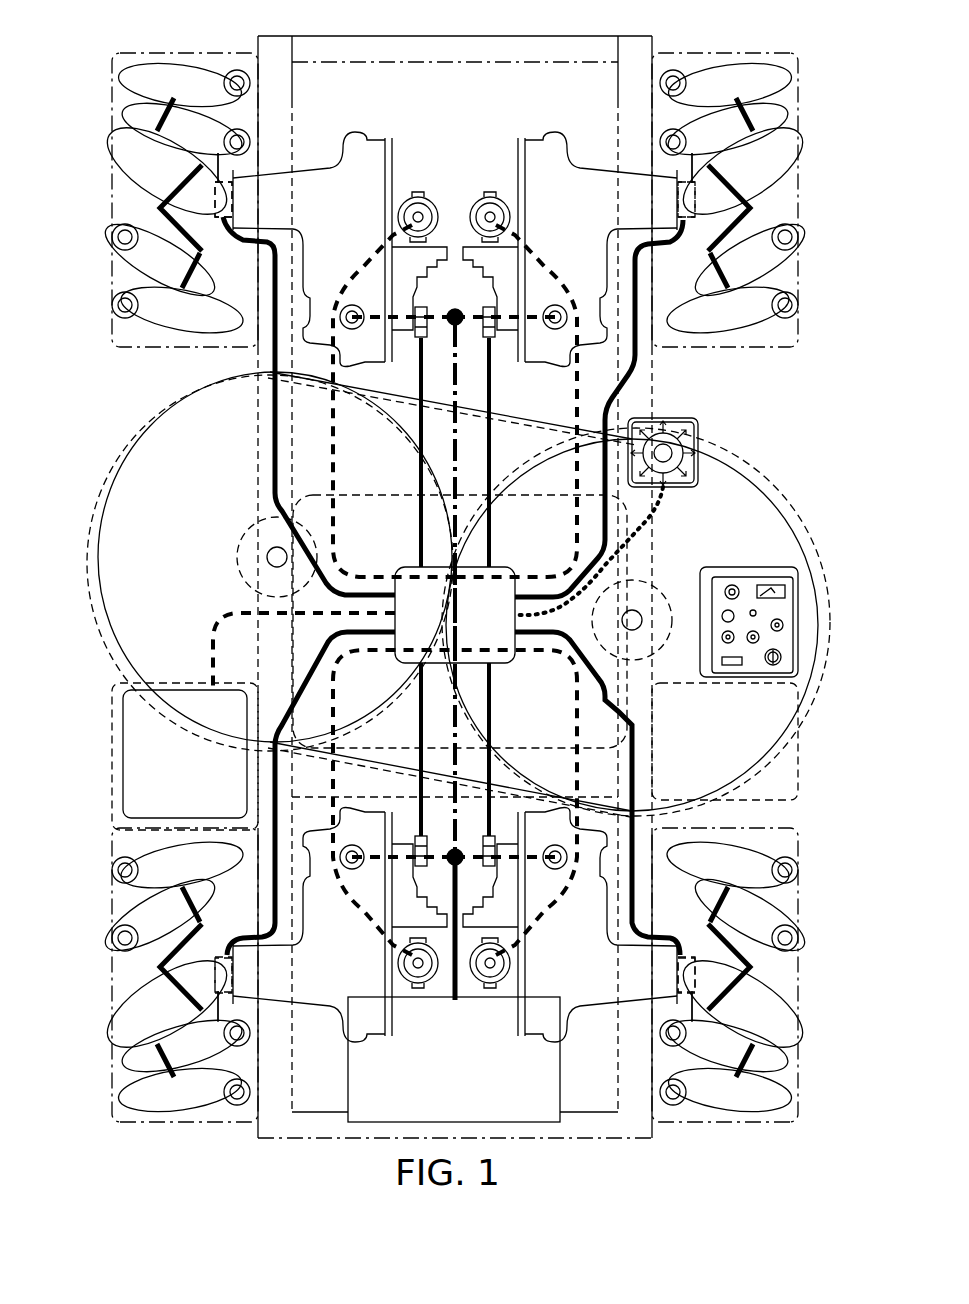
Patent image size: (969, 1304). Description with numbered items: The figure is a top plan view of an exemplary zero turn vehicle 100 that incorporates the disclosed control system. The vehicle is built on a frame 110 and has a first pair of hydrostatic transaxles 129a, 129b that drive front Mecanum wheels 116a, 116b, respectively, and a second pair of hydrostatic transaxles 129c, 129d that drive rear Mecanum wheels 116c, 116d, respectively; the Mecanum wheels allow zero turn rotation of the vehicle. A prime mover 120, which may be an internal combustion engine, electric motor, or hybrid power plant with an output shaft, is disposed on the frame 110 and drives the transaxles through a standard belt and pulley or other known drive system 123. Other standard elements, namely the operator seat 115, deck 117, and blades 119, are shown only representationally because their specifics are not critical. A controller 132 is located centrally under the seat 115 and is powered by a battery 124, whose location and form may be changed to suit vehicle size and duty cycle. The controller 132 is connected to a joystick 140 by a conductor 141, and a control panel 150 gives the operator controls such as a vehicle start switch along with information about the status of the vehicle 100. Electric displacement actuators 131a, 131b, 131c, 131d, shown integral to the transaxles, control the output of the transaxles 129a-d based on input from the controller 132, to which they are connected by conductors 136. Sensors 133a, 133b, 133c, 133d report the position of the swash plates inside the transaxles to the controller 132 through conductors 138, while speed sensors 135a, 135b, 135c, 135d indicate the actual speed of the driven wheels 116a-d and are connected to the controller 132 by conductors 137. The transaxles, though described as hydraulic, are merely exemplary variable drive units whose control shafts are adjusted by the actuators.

The zero turn vehicle 100 is at (91, 72).
The frame 110 is at (604, 1141).
The operator seat 115 is at (364, 495).
The front Mecanum wheel 116a is at (134, 158).
The front Mecanum wheel 116b is at (780, 160).
The rear Mecanum wheel 116c is at (134, 1017).
The rear Mecanum wheel 116d is at (776, 1017).
The deck 117 is at (152, 432).
The blades 119 is at (197, 398).
The prime mover 120 is at (475, 1087).
The drive system 123 is at (458, 720).
The battery 124 is at (206, 783).
The hydrostatic transaxle 129a is at (372, 236).
The hydrostatic transaxle 129b is at (592, 236).
The hydrostatic transaxle 129c is at (372, 959).
The hydrostatic transaxle 129d is at (592, 959).
The electric displacement actuator 131a is at (413, 200).
The electric displacement actuator 131b is at (495, 200).
The electric displacement actuator 131c is at (412, 980).
The electric displacement actuator 131d is at (497, 980).
The controller 132 is at (444, 596).
The sensor 133a is at (420, 308).
The sensor 133b is at (490, 308).
The sensor 133c is at (419, 868).
The sensor 133d is at (491, 868).
The speed sensor 135a is at (233, 187).
The speed sensor 135b is at (677, 187).
The speed sensor 135c is at (233, 984).
The speed sensor 135d is at (677, 984).
The conductors 136 is at (577, 438).
The conductors 137 is at (636, 378).
The conductors 138 is at (462, 388).
The joystick 140 is at (676, 418).
The conductor 141 is at (637, 535).
The control panel 150 is at (750, 582).